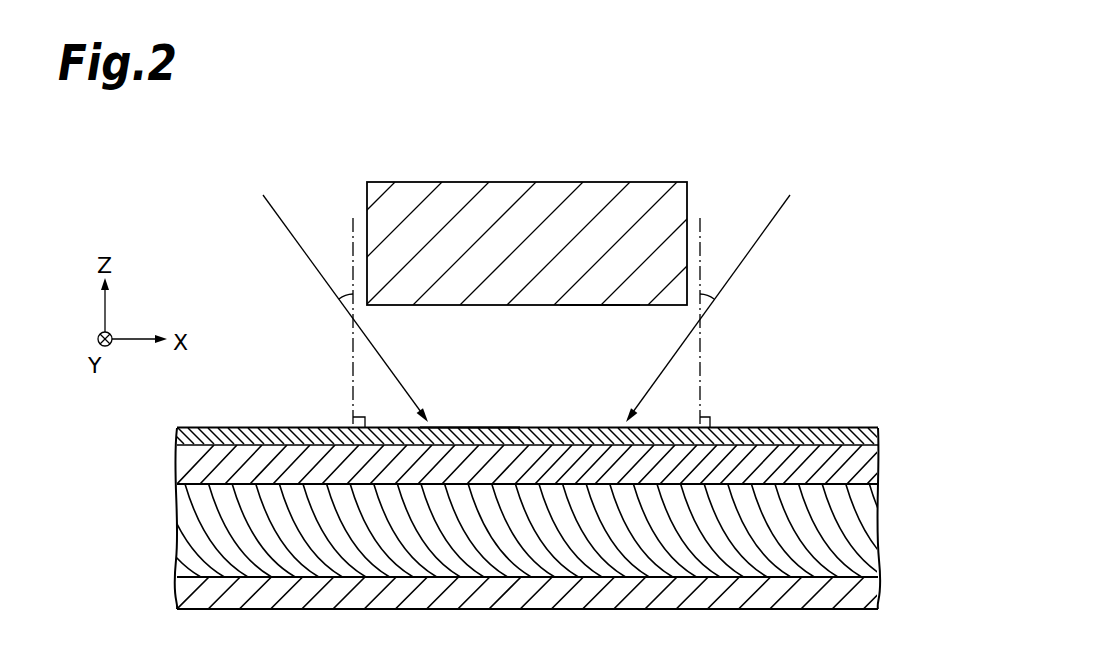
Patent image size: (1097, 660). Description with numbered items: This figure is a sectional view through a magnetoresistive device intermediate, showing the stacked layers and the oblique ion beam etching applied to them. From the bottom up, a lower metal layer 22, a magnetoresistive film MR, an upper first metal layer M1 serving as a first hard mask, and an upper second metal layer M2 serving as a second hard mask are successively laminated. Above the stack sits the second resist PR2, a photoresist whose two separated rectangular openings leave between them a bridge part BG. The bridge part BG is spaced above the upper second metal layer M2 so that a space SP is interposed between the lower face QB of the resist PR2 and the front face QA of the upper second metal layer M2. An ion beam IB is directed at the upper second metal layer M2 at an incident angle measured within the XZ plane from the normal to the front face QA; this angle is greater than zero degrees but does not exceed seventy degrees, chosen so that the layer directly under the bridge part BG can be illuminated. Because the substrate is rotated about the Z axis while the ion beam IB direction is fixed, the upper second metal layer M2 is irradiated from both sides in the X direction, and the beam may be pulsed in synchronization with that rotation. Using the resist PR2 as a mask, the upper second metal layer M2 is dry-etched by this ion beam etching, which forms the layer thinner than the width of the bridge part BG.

The second resist PR2 is at (521, 198).
The bridge part BG is at (597, 197).
The ion beam IB is at (307, 255).
The space SP is at (680, 372).
The front face QA is at (498, 426).
The lower face QB is at (582, 306).
The upper second metal layer M2 is at (866, 435).
The upper first metal layer M1 is at (864, 467).
The magnetoresistive film MR is at (864, 528).
The lower metal layer 22 is at (864, 593).